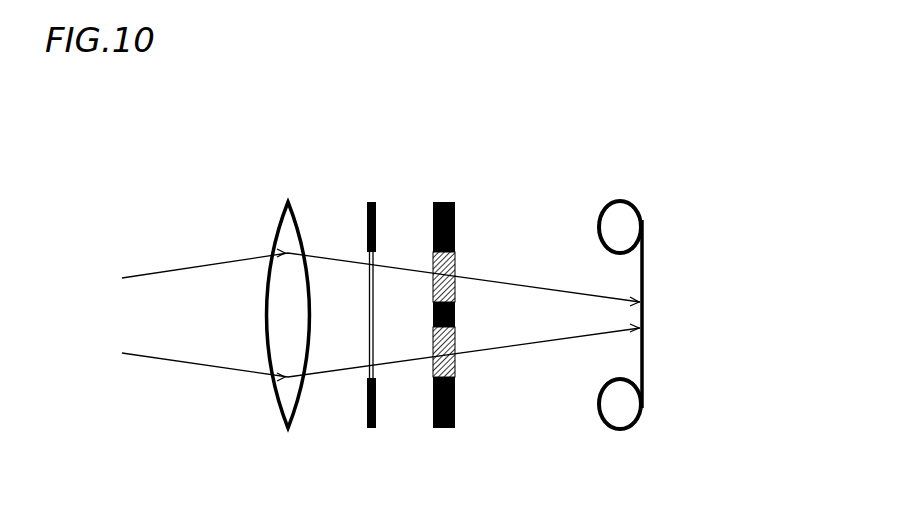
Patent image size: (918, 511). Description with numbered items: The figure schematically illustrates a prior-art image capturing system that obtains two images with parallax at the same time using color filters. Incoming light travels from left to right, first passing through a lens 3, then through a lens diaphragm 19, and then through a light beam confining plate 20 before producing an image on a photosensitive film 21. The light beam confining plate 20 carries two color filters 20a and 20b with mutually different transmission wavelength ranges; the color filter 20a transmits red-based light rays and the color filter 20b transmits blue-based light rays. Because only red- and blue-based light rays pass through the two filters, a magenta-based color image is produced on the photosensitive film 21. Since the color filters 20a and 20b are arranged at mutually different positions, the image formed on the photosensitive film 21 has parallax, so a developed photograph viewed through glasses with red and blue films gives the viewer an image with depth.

The lens 3 is at (288, 203).
The lens diaphragm 19 is at (372, 203).
The light beam confining plate 20 is at (495, 288).
The color filter 20a is at (455, 273).
The color filter 20b is at (455, 357).
The photosensitive film 21 is at (644, 265).